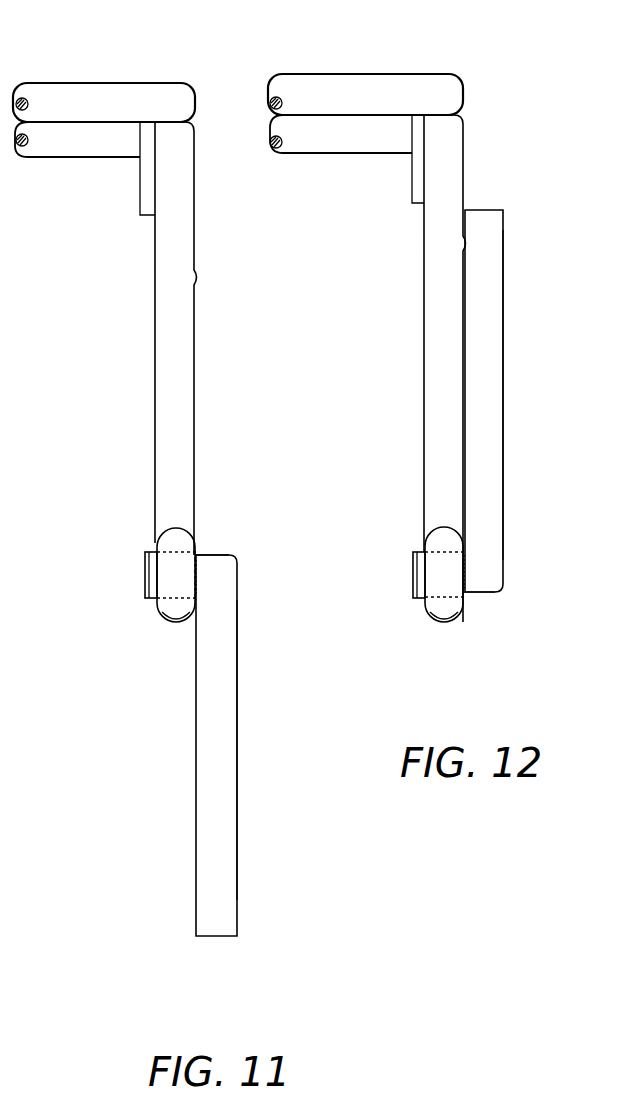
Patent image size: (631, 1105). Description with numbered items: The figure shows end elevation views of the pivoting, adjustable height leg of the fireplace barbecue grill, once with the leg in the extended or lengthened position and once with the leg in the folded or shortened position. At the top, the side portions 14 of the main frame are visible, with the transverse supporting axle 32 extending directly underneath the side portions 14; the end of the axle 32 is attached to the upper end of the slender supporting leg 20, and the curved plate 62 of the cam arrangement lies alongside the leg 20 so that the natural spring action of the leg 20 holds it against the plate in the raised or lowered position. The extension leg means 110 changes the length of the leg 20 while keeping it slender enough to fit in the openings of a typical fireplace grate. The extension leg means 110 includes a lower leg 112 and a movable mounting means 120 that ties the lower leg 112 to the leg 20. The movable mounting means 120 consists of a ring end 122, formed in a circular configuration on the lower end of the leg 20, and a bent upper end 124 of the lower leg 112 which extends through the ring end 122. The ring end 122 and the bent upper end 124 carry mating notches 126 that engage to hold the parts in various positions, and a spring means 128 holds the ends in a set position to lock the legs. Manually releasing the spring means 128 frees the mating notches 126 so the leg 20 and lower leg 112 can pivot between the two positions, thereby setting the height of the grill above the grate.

In FIG. 11, the side portions 14 is at (108, 92).
In FIG. 12, the side portions 14 is at (362, 82).
In FIG. 11, the transverse supporting axle 32 is at (62, 157).
In FIG. 12, the transverse supporting axle 32 is at (313, 150).
In FIG. 11, the curved plate 62 is at (143, 206).
In FIG. 12, the curved plate 62 is at (412, 197).
In FIG. 11, the supporting legs 20 is at (155, 355).
In FIG. 12, the supporting legs 20 is at (430, 383).
In FIG. 11, the extension leg means 110 is at (197, 730).
In FIG. 12, the extension leg means 110 is at (503, 448).
In FIG. 11, the lower leg 112 is at (230, 752).
In FIG. 12, the lower leg 112 is at (495, 322).
In FIG. 11, the movable mounting means 120 is at (155, 543).
In FIG. 12, the movable mounting means 120 is at (425, 545).
In FIG. 11, the ring end 122 is at (166, 614).
In FIG. 12, the ring end 122 is at (443, 618).
In FIG. 11, the bent upper end 124 is at (205, 553).
In FIG. 12, the bent upper end 124 is at (488, 594).
In FIG. 11, the mating notches 126 is at (198, 582).
In FIG. 12, the mating notches 126 is at (466, 568).
In FIG. 11, the spring means 128 is at (150, 600).
In FIG. 12, the spring means 128 is at (418, 598).